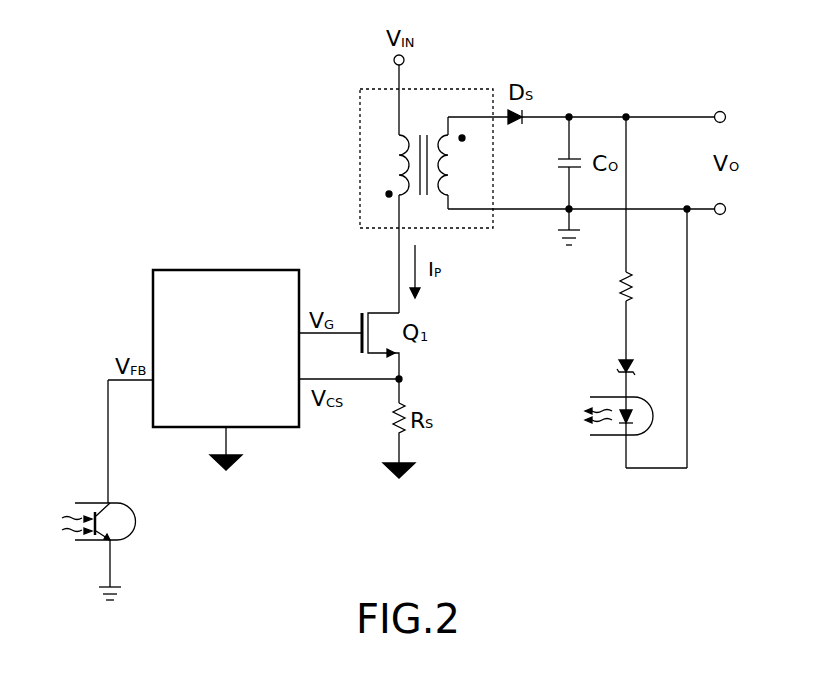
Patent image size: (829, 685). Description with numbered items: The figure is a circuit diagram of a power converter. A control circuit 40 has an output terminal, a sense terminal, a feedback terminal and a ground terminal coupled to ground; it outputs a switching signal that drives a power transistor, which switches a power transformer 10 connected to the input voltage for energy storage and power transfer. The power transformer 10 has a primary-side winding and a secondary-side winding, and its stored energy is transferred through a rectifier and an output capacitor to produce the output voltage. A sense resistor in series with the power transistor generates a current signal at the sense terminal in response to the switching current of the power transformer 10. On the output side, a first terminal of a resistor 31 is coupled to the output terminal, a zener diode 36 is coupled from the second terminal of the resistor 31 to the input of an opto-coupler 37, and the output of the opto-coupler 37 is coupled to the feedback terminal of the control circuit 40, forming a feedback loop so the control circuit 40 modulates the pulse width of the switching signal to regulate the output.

The power transformer 10 is at (442, 82).
The resistor 31 is at (645, 286).
The zener diode 36 is at (644, 363).
The opto-coupler 37 is at (345, 469).
The control circuit 40 is at (226, 337).